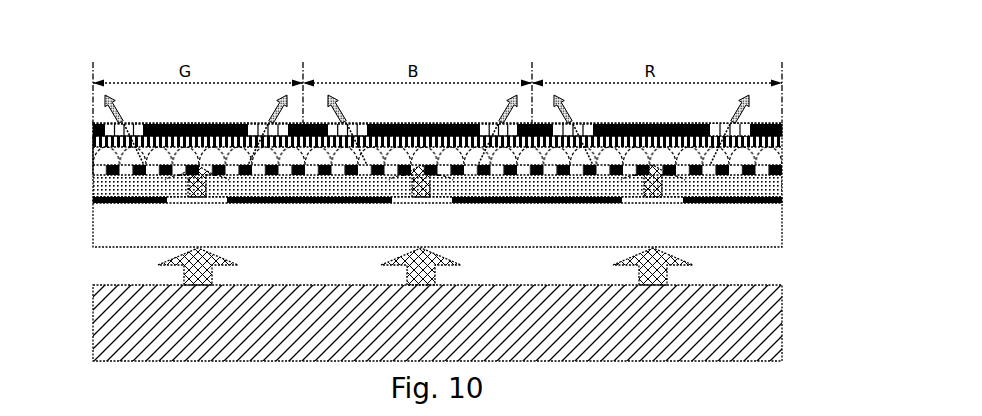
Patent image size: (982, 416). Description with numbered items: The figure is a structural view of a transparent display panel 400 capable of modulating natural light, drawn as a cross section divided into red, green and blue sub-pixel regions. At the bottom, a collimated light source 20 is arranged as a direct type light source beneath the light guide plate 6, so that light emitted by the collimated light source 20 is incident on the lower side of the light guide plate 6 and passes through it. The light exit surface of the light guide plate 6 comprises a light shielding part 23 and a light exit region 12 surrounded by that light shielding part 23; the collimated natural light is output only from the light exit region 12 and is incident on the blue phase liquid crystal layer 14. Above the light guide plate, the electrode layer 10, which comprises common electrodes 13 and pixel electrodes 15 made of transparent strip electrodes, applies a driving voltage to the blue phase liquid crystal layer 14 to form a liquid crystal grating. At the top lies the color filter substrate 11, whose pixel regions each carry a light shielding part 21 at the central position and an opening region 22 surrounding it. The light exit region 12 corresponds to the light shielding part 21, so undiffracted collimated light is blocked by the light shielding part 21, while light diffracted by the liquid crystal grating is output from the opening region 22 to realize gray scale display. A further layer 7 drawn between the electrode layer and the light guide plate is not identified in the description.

The transparent display panel 400 is at (138, 22).
The light shielding part 21 is at (653, 128).
The opening region 22 is at (733, 128).
The color filter substrate 11 is at (782, 123).
The common electrodes 13 is at (782, 141).
The blue phase liquid crystal layer 14 is at (782, 158).
The pixel electrodes 15 is at (782, 172).
The electrode layer 10 is at (93, 170).
The light guide layer 7 is at (782, 193).
The light shielding part 23 is at (313, 203).
The light exit region 12 is at (217, 198).
The light guide plate 6 is at (782, 242).
The collimated light source 20 is at (782, 325).